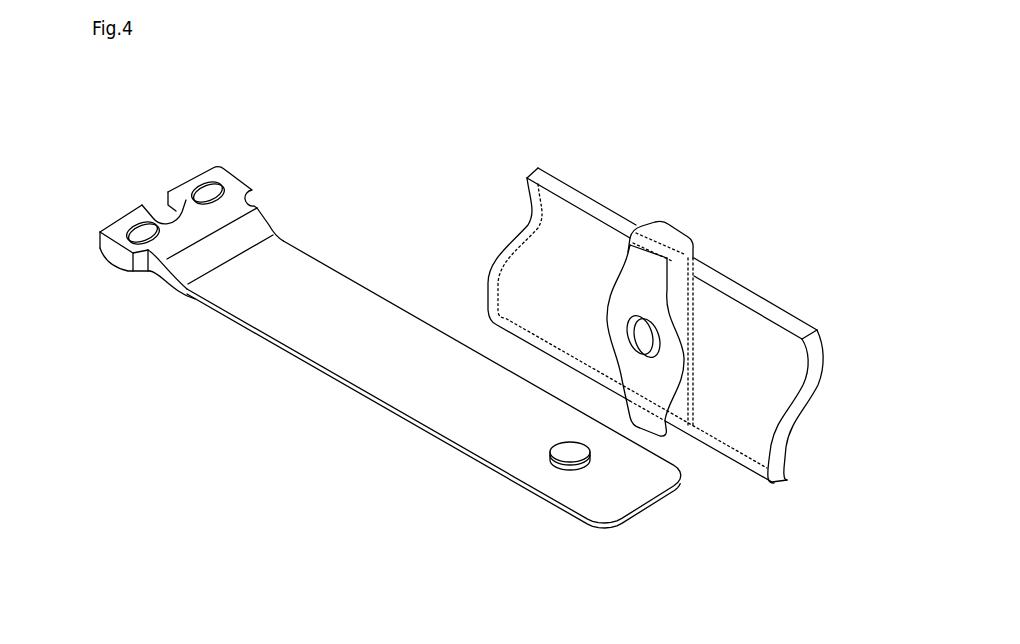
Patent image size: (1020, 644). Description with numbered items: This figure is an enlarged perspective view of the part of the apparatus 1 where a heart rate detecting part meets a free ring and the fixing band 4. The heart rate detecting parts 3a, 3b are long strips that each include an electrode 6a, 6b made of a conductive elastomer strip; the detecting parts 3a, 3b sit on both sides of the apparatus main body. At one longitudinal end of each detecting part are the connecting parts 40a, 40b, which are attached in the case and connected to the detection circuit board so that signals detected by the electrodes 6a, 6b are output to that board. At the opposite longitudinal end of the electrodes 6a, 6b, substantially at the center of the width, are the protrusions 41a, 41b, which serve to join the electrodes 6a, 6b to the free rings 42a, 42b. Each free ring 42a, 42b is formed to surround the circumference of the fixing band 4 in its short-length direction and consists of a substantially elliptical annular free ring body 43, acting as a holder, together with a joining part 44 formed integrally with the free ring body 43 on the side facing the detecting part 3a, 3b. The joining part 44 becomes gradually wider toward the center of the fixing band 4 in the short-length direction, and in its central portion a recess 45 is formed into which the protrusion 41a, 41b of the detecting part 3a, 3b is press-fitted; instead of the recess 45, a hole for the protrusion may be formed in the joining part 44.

The bus bar connection structure 1 is at (471, 170).
The heart rate detecting part 3a is at (390, 338).
The heart rate detecting part 3b is at (390, 338).
The electrode 6a is at (414, 370).
The electrode 6b is at (414, 370).
The connecting part 40a is at (203, 186).
The connecting part 40b is at (203, 186).
The protrusion 41a is at (591, 508).
The protrusion 41b is at (591, 508).
The free ring 42a is at (656, 293).
The free ring 42b is at (656, 293).
The free ring body 43 is at (709, 284).
The joining part 44 is at (686, 360).
The recess 45 is at (630, 345).
The fixing band 4 is at (781, 302).